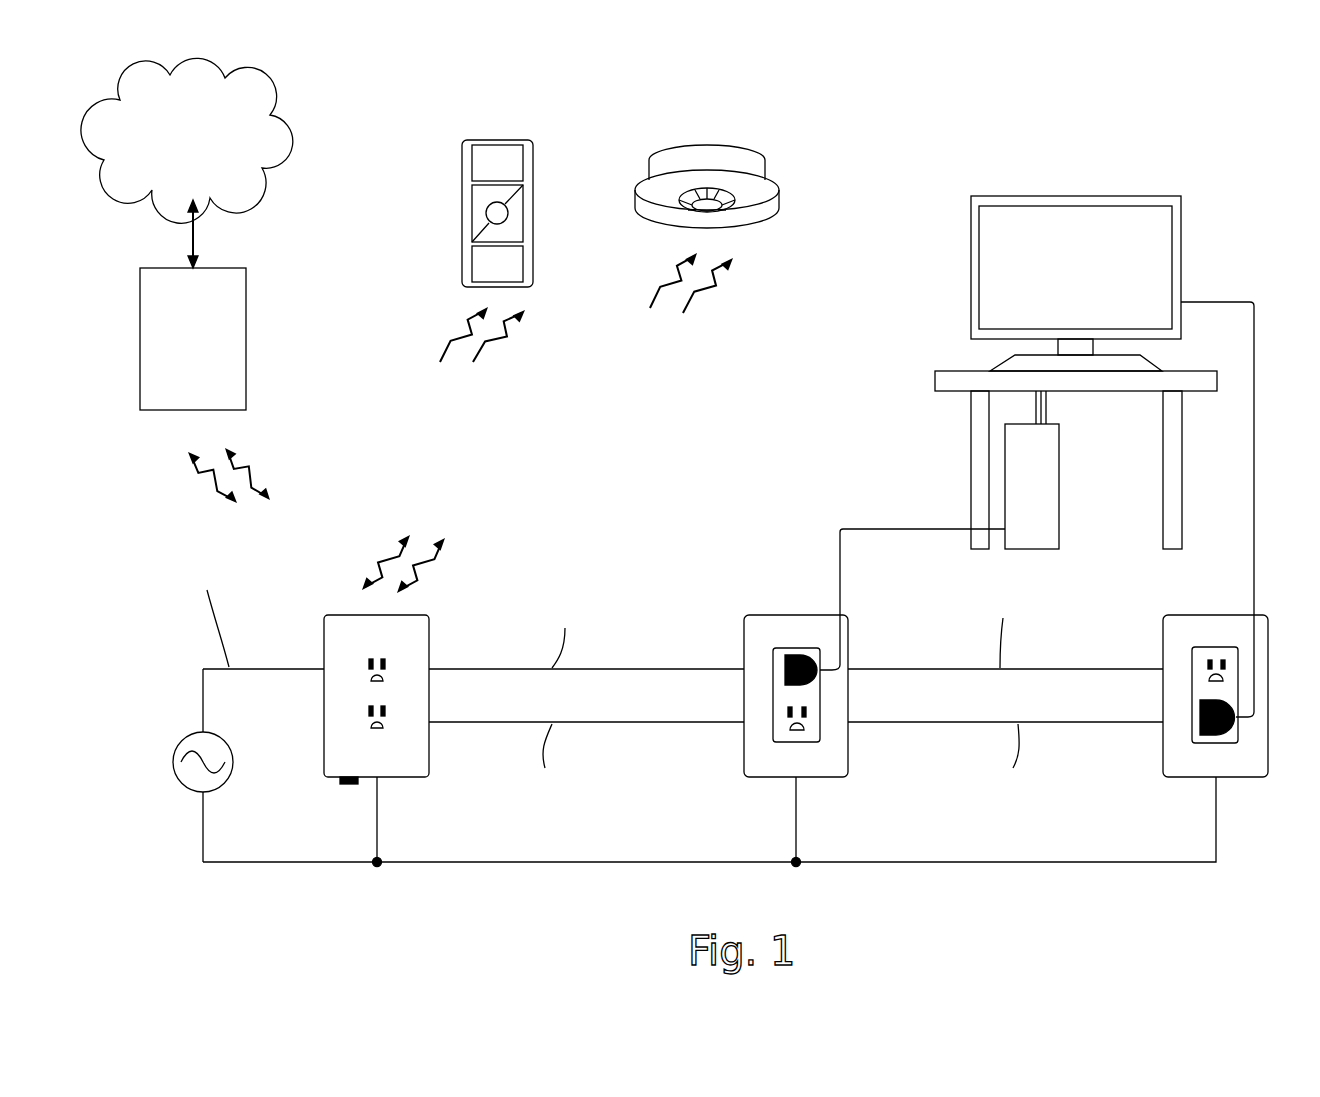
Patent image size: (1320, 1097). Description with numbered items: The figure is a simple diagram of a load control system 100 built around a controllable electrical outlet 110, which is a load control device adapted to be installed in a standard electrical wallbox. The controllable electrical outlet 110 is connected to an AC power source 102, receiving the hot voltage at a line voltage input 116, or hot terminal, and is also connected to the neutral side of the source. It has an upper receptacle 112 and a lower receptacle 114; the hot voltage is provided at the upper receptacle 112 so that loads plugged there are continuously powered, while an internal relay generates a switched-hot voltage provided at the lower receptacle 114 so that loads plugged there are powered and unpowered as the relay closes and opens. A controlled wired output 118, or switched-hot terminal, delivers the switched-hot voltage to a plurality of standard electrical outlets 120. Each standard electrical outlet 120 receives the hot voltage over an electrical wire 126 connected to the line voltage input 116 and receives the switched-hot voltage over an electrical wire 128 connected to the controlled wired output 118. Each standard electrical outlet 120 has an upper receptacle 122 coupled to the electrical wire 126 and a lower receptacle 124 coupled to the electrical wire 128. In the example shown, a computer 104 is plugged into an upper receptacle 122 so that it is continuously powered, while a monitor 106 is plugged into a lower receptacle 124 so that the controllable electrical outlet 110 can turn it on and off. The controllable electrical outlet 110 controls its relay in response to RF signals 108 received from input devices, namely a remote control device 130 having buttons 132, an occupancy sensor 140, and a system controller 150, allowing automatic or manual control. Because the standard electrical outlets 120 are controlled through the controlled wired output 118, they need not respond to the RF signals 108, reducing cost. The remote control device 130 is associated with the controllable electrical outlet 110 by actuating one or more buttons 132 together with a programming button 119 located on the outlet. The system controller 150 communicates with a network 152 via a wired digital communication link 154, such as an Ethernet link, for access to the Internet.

The load control system 100 is at (1205, 152).
The AC power source 102 is at (215, 752).
The computer 104 is at (1040, 490).
The monitor 106 is at (997, 287).
The RF signals 108 is at (268, 462).
The controllable electrical outlet 110 is at (388, 731).
The upper receptacle 112 is at (400, 653).
The lower receptacle 114 is at (352, 722).
The line voltage input 116 is at (322, 668).
The controlled wired output 118 is at (430, 724).
The programming button 119 is at (358, 785).
The standard electrical outlet 120 is at (750, 745).
The upper receptacle 122 is at (768, 660).
The lower receptacle 124 is at (810, 750).
The electrical wire 126 is at (640, 668).
The electrical wire 128 is at (628, 724).
The remote control device 130 is at (536, 147).
The buttons 132 is at (484, 160).
The occupancy sensor 140 is at (718, 146).
The system controller 150 is at (218, 370).
The network 152 is at (187, 140).
The wired digital communication link 154 is at (193, 232).